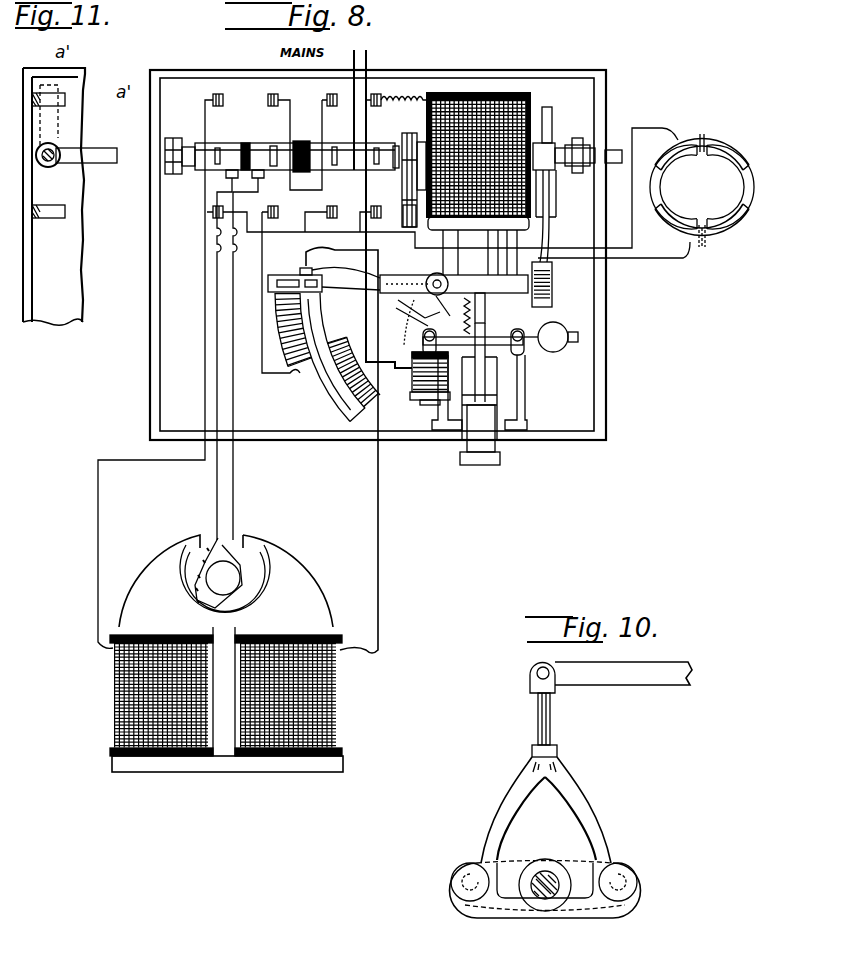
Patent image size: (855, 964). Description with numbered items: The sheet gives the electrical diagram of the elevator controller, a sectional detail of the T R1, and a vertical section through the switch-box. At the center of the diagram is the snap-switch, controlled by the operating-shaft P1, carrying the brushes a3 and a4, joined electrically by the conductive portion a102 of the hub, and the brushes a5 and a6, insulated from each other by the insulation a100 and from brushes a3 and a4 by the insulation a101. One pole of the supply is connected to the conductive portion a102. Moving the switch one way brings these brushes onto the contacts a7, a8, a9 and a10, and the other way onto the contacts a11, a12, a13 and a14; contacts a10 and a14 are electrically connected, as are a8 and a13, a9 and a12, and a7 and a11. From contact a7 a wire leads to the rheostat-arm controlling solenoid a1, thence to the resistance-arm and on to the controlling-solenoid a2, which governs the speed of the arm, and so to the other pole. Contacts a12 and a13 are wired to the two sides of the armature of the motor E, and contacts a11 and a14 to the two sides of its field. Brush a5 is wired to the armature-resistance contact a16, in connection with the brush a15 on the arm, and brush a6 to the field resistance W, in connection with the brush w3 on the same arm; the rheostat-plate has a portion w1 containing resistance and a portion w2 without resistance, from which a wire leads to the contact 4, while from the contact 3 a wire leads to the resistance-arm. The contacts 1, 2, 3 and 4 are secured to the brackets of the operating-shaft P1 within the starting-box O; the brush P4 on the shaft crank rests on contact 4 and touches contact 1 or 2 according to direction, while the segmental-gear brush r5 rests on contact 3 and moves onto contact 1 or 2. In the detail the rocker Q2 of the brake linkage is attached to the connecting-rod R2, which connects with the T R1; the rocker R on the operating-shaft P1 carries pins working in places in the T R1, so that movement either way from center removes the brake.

In FIG. 8, the rheostat-arm controlling solenoid a1 is at (525, 112).
In FIG. 8, the controlling-solenoid a2 is at (410, 396).
In FIG. 8, the brush a3 is at (386, 142).
In FIG. 8, the brush a4 is at (340, 170).
In FIG. 8, the brush a5 is at (265, 156).
In FIG. 11, the brush a6 is at (53, 148).
In FIG. 8, the brush a6 is at (217, 148).
In FIG. 8, the contact a7 is at (396, 92).
In FIG. 8, the contact a8 is at (329, 92).
In FIG. 8, the contact a9 is at (273, 92).
In FIG. 11, the contact a10 is at (58, 92).
In FIG. 8, the contact a10 is at (219, 92).
In FIG. 8, the contact a11 is at (366, 214).
In FIG. 8, the contact a12 is at (316, 213).
In FIG. 8, the contact a13 is at (276, 218).
In FIG. 11, the contact a14 is at (56, 219).
In FIG. 8, the contact a14 is at (219, 204).
In FIG. 8, the brush a15 is at (280, 280).
In FIG. 8, the armature-resistance contact a16 is at (300, 384).
In FIG. 8, the insulation a100 is at (250, 136).
In FIG. 8, the insulation a101 is at (303, 136).
In FIG. 8, the conductive portion of switch hub a102 is at (344, 147).
In FIG. 8, the motor-field rheostat-plate W is at (324, 330).
In FIG. 8, the resistance portion of rheostat-plate w1 is at (345, 364).
In FIG. 8, the non-resistance portion of rheostat-plate w2 is at (322, 324).
In FIG. 8, the brush w3 is at (352, 294).
In FIG. 8, the motor E is at (226, 641).
In FIG. 8, the starting-box O is at (646, 102).
In FIG. 8, the contact 1 is at (745, 190).
In FIG. 8, the contact 2 is at (664, 188).
In FIG. 8, the contact 3 is at (735, 142).
In FIG. 8, the contact 4 is at (736, 236).
In FIG. 11, the operating-shaft P1 is at (58, 151).
In FIG. 8, the operating-shaft P1 is at (616, 150).
In FIG. 10, the operating-shaft P1 is at (544, 877).
In FIG. 8, the brush P4 is at (702, 225).
In FIG. 8, the brush r5 is at (697, 173).
In FIG. 10, the rocker Q2 is at (603, 681).
In FIG. 10, the connecting-rod R2 is at (551, 722).
In FIG. 10, the T R1 is at (583, 805).
In FIG. 10, the rocker R is at (515, 866).